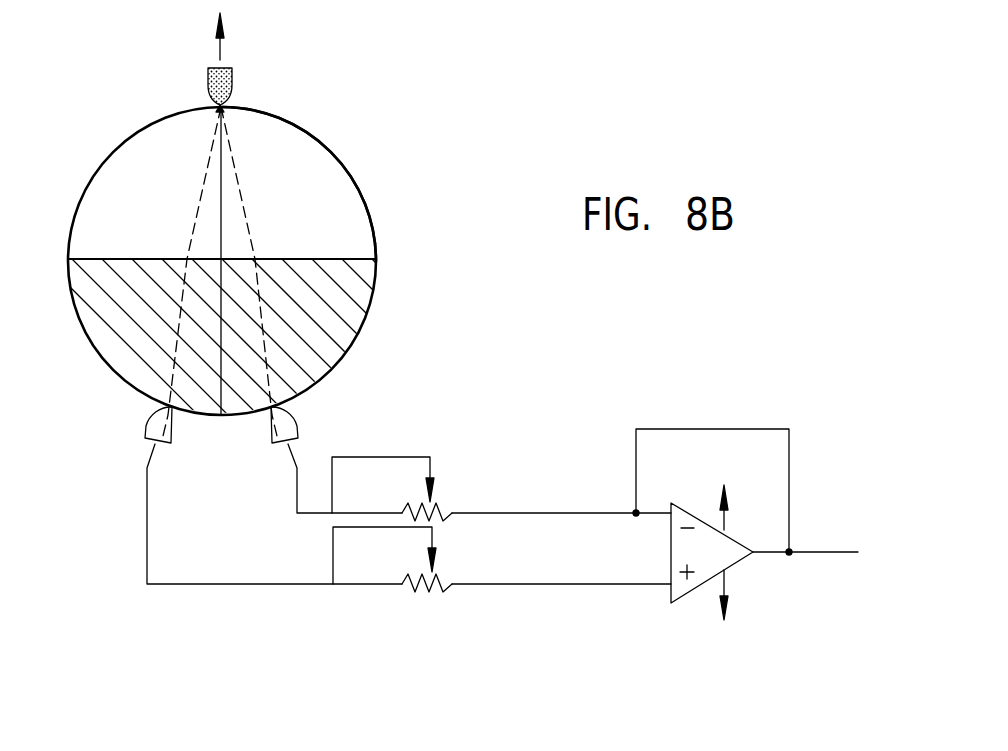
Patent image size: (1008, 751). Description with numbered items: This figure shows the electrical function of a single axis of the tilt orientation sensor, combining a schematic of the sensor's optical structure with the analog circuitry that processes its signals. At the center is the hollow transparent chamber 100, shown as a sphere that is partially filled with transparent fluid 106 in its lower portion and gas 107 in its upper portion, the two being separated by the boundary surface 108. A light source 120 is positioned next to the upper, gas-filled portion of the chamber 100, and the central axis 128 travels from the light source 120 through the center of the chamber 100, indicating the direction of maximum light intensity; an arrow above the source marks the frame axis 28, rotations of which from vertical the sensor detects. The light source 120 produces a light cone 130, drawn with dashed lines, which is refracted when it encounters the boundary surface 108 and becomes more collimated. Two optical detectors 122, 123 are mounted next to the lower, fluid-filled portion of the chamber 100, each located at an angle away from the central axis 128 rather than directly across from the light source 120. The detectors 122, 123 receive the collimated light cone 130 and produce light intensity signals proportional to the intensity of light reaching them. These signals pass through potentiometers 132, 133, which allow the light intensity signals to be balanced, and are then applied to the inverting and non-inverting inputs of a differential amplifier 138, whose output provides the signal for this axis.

The frame axis 28 is at (220, 52).
The hollow transparent chamber 100 is at (112, 147).
The transparent fluid 106 is at (358, 310).
The gas 107 is at (337, 180).
The boundary surface 108 is at (347, 258).
The light source 120 is at (231, 82).
The optical detector 122 is at (148, 428).
The optical detector 123 is at (272, 433).
The central axis 128 is at (222, 182).
The light cone 130 is at (205, 187).
The potentiometer 132 is at (447, 573).
The potentiometer 133 is at (447, 500).
The differential amplifier 138 is at (742, 560).